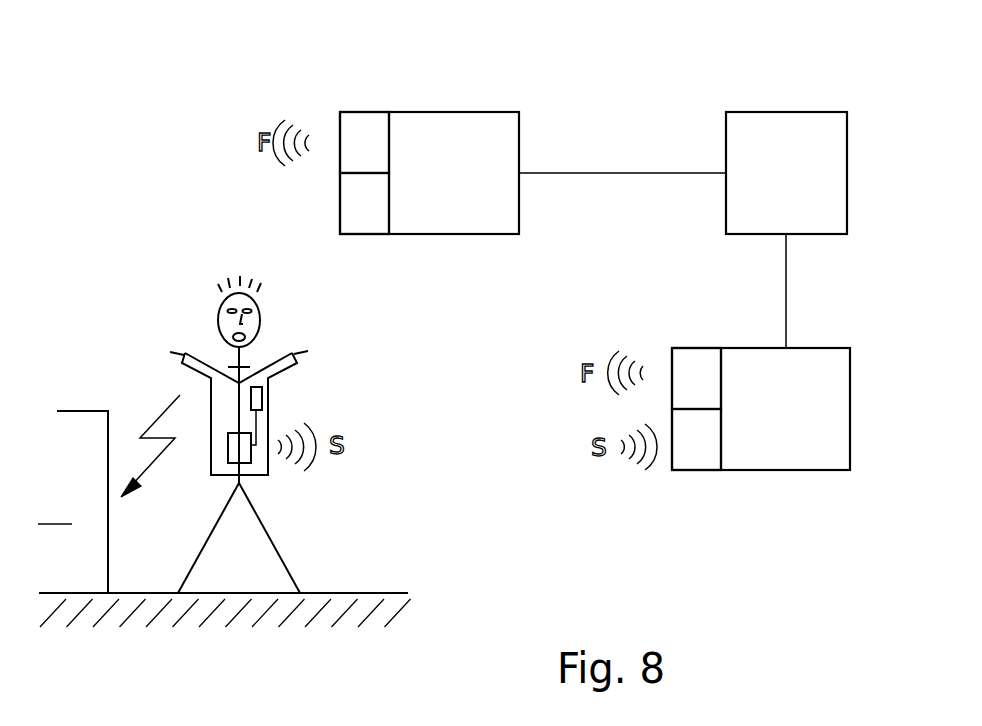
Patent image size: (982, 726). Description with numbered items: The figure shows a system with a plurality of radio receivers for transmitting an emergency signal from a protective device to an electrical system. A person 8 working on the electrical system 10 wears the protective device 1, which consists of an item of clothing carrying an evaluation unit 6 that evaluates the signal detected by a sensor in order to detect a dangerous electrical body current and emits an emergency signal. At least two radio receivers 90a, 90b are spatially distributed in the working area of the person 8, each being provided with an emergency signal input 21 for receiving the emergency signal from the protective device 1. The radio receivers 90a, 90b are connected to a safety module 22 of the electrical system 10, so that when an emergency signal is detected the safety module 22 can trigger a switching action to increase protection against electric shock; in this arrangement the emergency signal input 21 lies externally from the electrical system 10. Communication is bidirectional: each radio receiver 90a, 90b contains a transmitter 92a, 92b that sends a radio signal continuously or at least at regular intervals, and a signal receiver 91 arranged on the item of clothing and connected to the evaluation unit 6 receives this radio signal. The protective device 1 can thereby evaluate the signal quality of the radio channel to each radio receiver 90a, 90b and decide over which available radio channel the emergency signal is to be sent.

The person 8 is at (195, 300).
The protective device 1 is at (184, 364).
The signal receiver 91 is at (263, 397).
The evaluation unit 6 is at (230, 449).
The electrical system 10 is at (73, 476).
The radio receiver 90b is at (478, 110).
The transmitter 92b is at (360, 143).
The emergency signal input 21 is at (368, 202).
The safety module 22 is at (808, 177).
The radio receiver 90a is at (833, 348).
The transmitter 92a is at (688, 370).